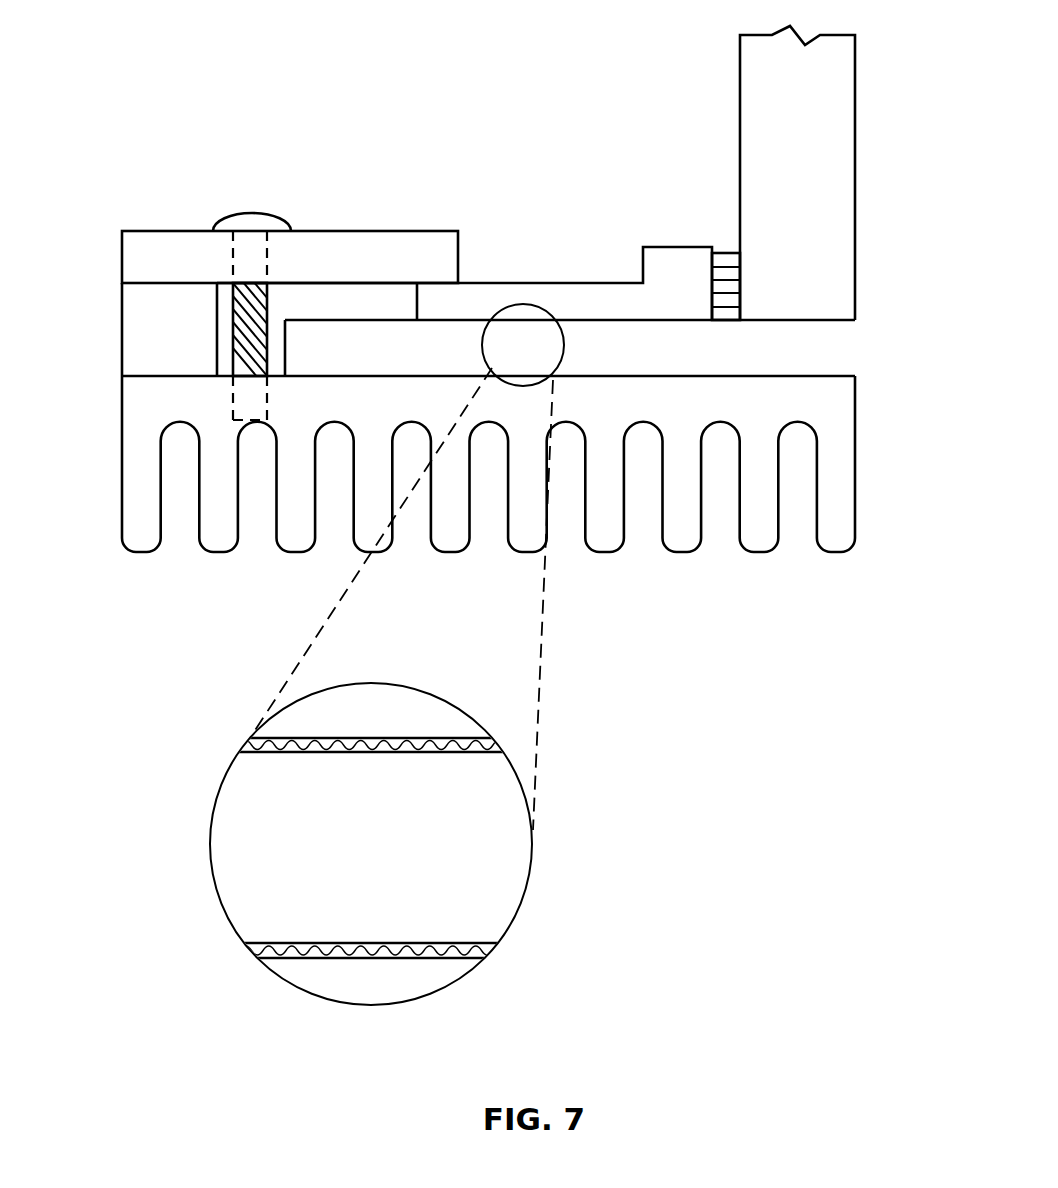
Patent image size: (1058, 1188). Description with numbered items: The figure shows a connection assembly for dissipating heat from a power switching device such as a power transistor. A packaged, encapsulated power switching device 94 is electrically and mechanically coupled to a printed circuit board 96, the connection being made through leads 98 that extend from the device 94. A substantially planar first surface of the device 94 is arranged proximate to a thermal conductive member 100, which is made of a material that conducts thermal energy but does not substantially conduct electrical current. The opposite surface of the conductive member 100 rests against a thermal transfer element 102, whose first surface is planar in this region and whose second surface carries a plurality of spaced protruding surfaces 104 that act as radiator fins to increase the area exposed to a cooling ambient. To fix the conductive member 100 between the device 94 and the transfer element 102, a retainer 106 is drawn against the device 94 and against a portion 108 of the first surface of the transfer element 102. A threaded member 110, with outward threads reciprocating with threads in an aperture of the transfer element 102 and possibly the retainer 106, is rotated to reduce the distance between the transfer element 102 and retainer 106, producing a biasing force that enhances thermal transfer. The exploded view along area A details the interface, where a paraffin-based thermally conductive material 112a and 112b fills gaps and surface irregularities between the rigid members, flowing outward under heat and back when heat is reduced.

The packaged power switching device 94 is at (552, 293).
The printed circuit board 96 is at (838, 144).
The leads 98 is at (728, 253).
The thermal conductive member 100 is at (843, 353).
The thermal transfer element 102 is at (847, 425).
The protruding surfaces 104 is at (757, 547).
The retainer 106 is at (398, 231).
The portion of the first surface of the transfer element 108 is at (138, 352).
The threaded member 110 is at (233, 283).
The paraffin-based thermally conductive material 112a is at (278, 752).
The paraffin-based thermally conductive material 112b is at (276, 943).
The area A is at (563, 338).